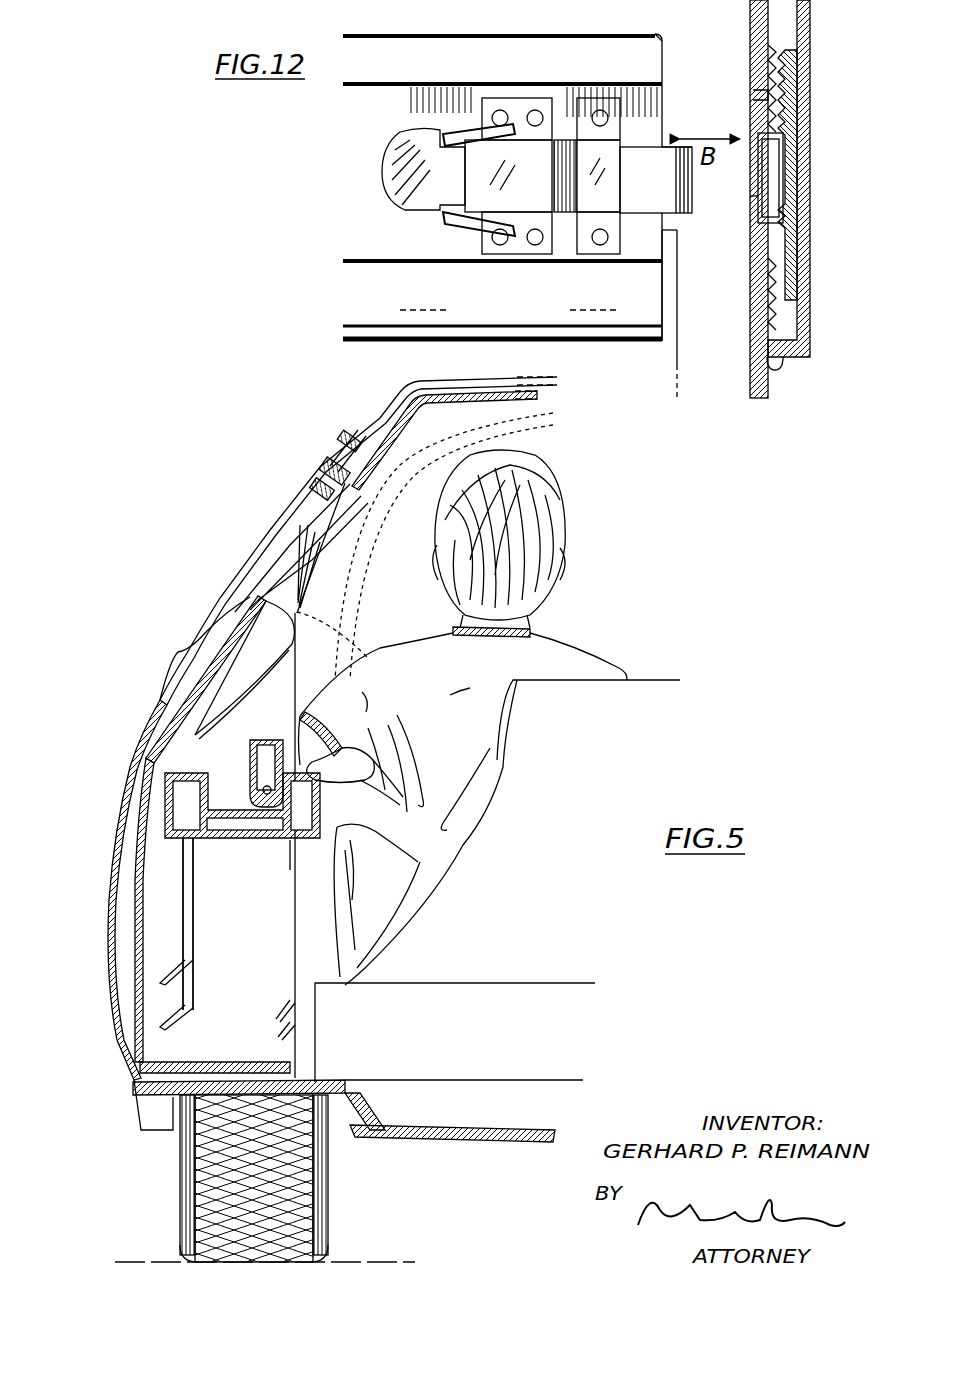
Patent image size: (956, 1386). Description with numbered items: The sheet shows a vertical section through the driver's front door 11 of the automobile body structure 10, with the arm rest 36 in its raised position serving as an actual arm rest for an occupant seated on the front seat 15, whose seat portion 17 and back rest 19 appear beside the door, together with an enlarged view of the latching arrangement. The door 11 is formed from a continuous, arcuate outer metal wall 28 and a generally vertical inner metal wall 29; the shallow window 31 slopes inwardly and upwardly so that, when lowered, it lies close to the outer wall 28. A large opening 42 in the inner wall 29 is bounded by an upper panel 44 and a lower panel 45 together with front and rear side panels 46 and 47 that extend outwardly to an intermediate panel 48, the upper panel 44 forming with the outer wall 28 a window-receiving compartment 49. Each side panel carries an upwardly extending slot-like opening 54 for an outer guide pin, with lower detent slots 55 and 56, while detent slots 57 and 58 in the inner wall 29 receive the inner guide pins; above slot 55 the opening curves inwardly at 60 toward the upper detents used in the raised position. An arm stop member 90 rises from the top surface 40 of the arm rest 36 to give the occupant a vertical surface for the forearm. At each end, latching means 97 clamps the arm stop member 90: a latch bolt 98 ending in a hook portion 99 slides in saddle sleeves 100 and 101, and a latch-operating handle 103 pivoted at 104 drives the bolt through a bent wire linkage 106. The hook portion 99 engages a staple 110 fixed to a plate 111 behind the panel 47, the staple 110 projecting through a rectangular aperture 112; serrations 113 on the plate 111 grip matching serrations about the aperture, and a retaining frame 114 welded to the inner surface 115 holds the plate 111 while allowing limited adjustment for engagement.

In FIG. 5, the automobile body structure 10 is at (255, 530).
In FIG. 5, the front door 11 is at (110, 770).
In FIG. 5, the front seat 15 is at (648, 678).
In FIG. 5, the seat portion 17 is at (455, 1062).
In FIG. 5, the back rest 19 is at (463, 717).
In FIG. 5, the outer metal wall 28 is at (117, 1050).
In FIG. 5, the inner metal wall 29 is at (295, 945).
In FIG. 5, the window 31 is at (205, 625).
In FIG. 5, the arm rest 36 is at (192, 770).
In FIG. 5, the top surface 40 is at (300, 765).
In FIG. 5, the opening 42 is at (283, 857).
In FIG. 5, the upper web or panel 44 is at (207, 700).
In FIG. 5, the lower web or panel 45 is at (228, 1062).
In FIG. 5, the front side web or panel 46 is at (237, 912).
In FIG. 12, the rear side web or panel 47 is at (755, 302).
In FIG. 5, the intermediate panel 48 is at (136, 892).
In FIG. 5, the window-receiving compartment 49 is at (168, 695).
In FIG. 5, the slot-like opening 54 is at (193, 944).
In FIG. 5, the upper detent slot 55 is at (168, 985).
In FIG. 5, the lower detent slot 56 is at (165, 1025).
In FIG. 5, the upper detent slot 57 is at (285, 1015).
In FIG. 5, the lower detent slot 58 is at (280, 1038).
In FIG. 5, the inwardly curving portion 60 is at (192, 845).
In FIG. 12, the arm stop member 90 is at (668, 60).
In FIG. 5, the arm stop member 90 is at (270, 740).
In FIG. 12, the latching means 97 is at (650, 295).
In FIG. 12, the latch bolt 98 is at (672, 245).
In FIG. 12, the hook portion 99 is at (665, 215).
In FIG. 12, the saddle sleeve 100 is at (630, 140).
In FIG. 12, the saddle sleeve 101 is at (535, 150).
In FIG. 12, the latch-operating handle 103 is at (400, 183).
In FIG. 12, the pivot 104 is at (468, 212).
In FIG. 12, the bent wire linkage 106 is at (450, 134).
In FIG. 12, the staple 110 is at (752, 196).
In FIG. 12, the plate 111 is at (785, 185).
In FIG. 12, the aperture 112 is at (755, 97).
In FIG. 12, the serrations 113 is at (784, 108).
In FIG. 12, the retaining frame 114 is at (800, 100).
In FIG. 12, the inner surface 115 is at (778, 45).